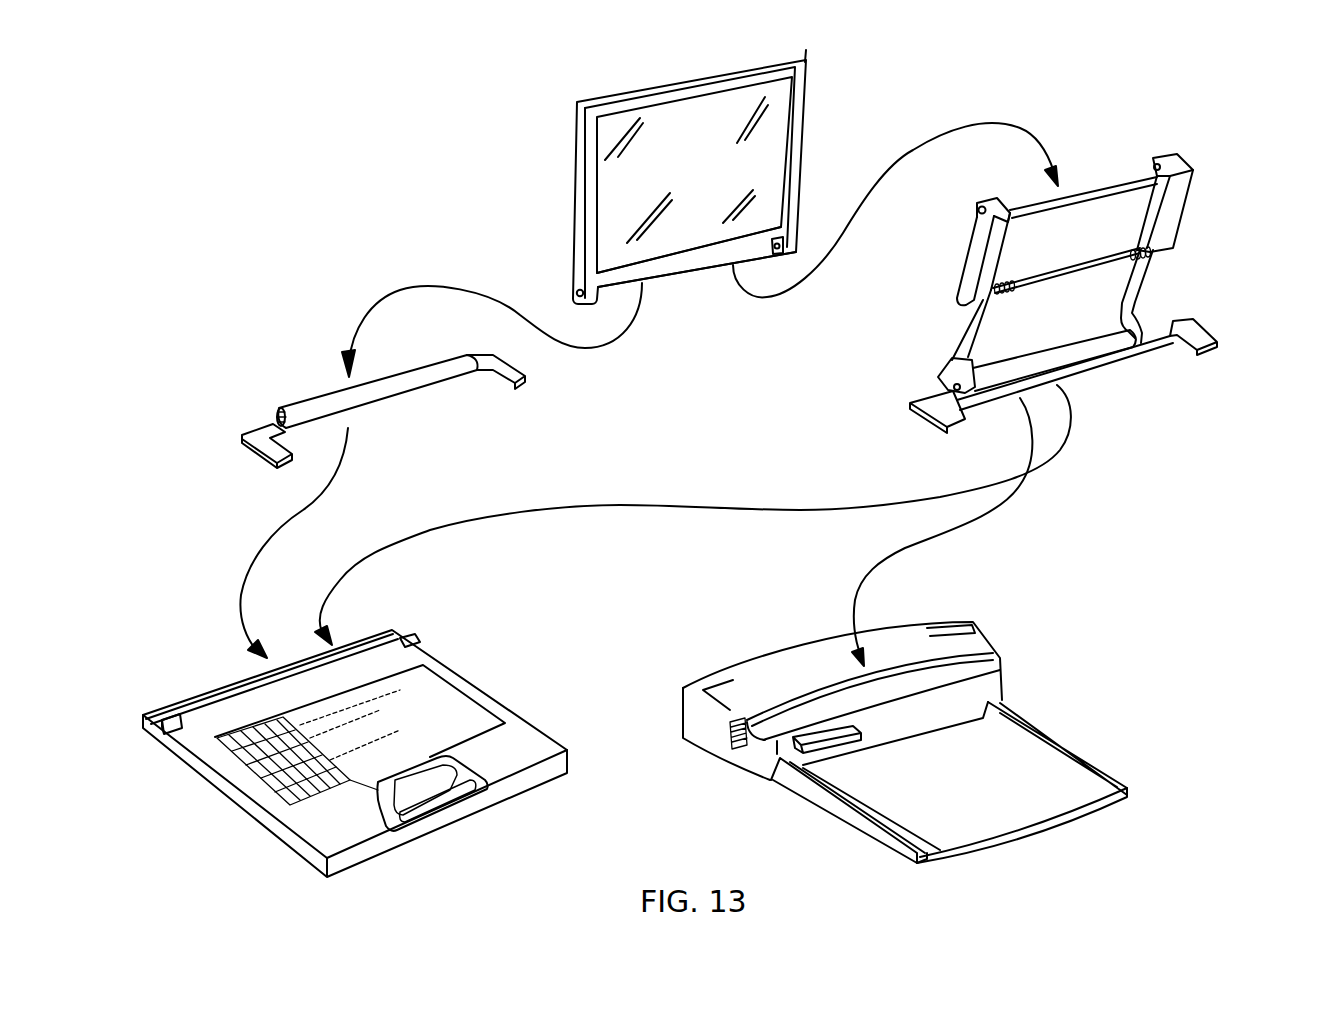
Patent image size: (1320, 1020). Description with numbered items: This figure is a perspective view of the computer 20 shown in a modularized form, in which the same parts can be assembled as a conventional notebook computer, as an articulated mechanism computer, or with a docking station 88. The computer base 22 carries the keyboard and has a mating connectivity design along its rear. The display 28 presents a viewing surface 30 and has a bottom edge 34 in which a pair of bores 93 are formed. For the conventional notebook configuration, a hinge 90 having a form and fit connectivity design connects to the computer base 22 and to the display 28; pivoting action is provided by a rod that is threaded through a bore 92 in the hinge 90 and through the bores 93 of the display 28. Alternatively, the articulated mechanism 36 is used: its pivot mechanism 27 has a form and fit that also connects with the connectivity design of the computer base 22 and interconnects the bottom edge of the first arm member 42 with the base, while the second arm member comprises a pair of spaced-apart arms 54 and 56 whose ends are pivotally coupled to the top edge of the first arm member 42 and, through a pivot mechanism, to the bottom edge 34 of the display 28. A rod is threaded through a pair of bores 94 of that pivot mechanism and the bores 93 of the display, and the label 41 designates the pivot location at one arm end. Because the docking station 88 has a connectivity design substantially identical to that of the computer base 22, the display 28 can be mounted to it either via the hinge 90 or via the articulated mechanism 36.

The computer 20 is at (405, 148).
The computer base 22 is at (223, 806).
The pivot mechanism 27 is at (917, 382).
The display 28 is at (565, 177).
The viewing surface 30 is at (760, 134).
The bottom edge 34 is at (696, 290).
The articulated mechanism 36 is at (1163, 392).
The arm pivot cap 41 is at (964, 207).
The first arm member 42 is at (1165, 288).
The arm 54 is at (1205, 199).
The arm 56 is at (960, 246).
The docking station 88 is at (1023, 699).
The hinge 90 is at (300, 360).
The bore 92 is at (276, 408).
The bores 93 is at (575, 296).
The bores 94 is at (983, 204).